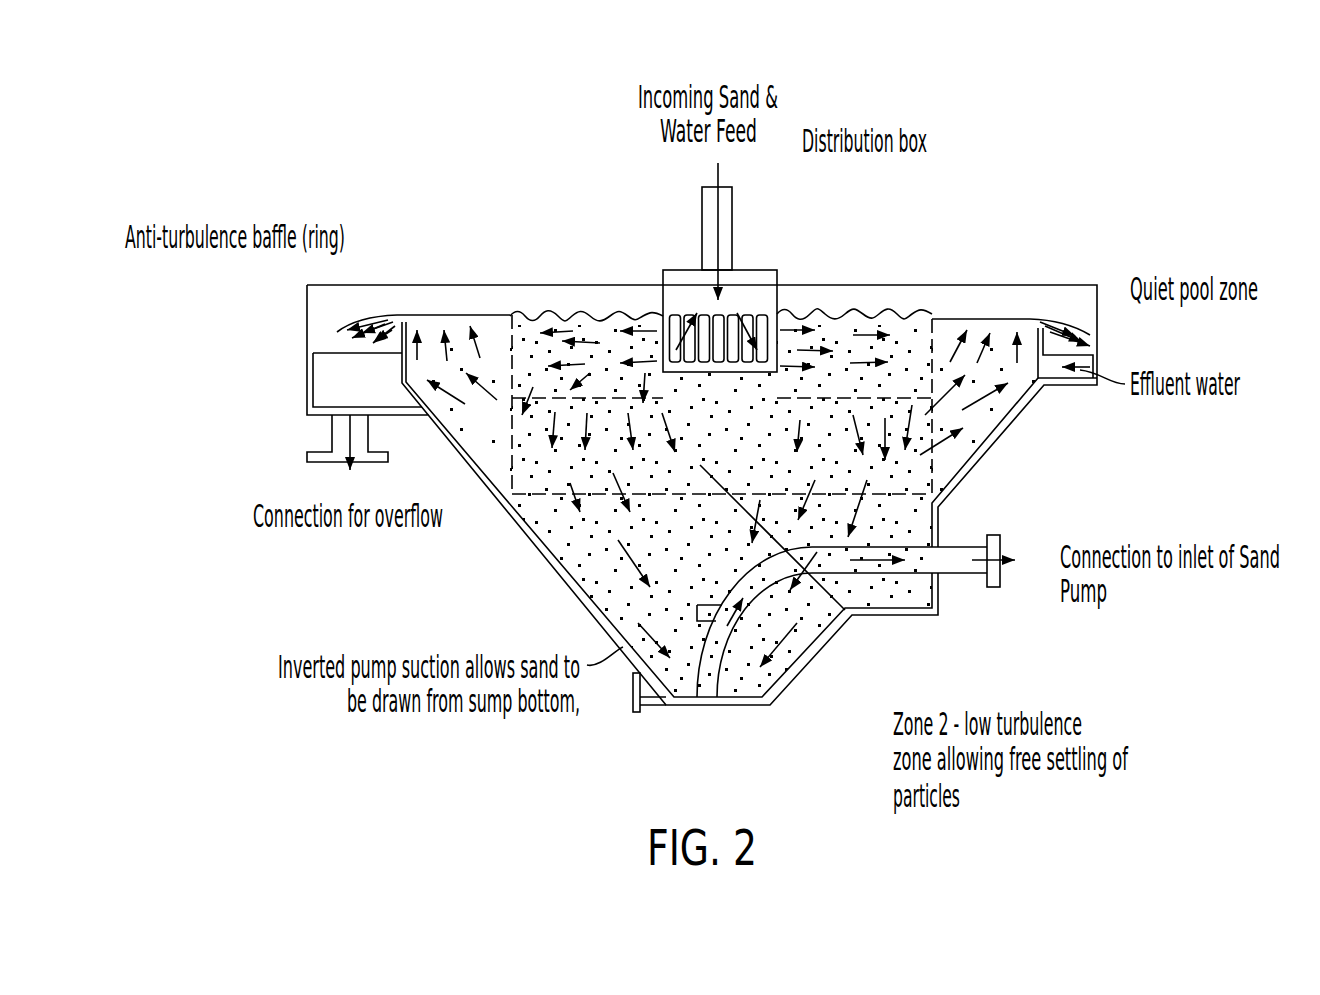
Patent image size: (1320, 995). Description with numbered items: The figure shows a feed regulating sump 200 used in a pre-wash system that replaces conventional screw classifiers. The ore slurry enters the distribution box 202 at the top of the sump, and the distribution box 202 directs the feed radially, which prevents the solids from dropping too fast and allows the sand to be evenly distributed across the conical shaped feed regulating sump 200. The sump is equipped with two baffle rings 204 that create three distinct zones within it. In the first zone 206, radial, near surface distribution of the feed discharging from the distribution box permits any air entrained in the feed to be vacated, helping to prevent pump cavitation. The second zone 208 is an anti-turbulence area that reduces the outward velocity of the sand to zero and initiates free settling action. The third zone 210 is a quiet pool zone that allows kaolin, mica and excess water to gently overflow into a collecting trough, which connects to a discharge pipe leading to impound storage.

The feed regulating sump 200 is at (1012, 242).
The distribution box 202 is at (760, 293).
The baffle rings 204 is at (510, 312).
The first zone 206 is at (602, 262).
The second zone 208 is at (845, 628).
The third zone 210 is at (1027, 300).